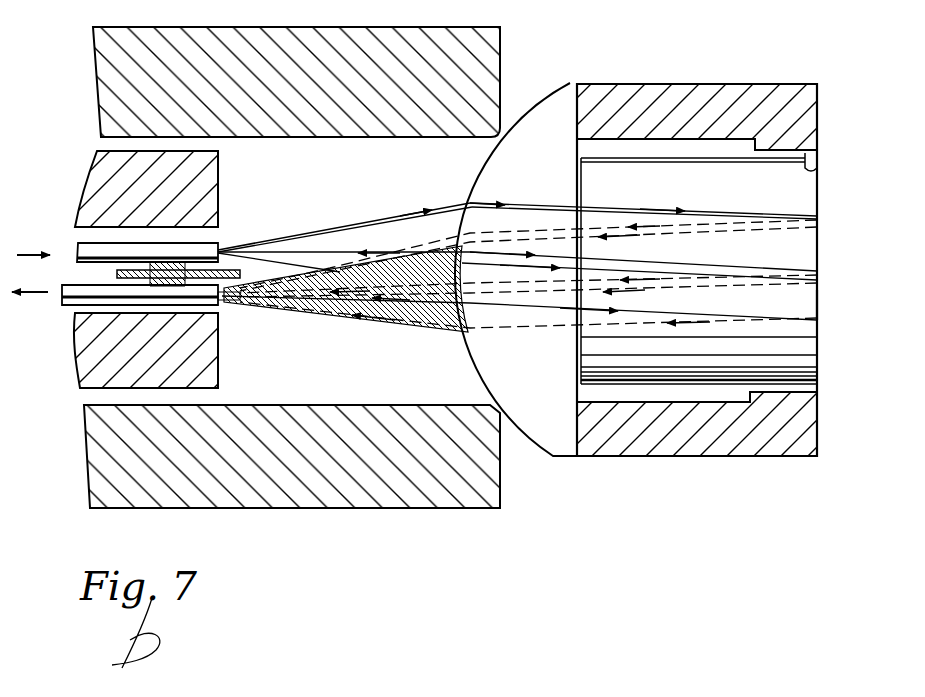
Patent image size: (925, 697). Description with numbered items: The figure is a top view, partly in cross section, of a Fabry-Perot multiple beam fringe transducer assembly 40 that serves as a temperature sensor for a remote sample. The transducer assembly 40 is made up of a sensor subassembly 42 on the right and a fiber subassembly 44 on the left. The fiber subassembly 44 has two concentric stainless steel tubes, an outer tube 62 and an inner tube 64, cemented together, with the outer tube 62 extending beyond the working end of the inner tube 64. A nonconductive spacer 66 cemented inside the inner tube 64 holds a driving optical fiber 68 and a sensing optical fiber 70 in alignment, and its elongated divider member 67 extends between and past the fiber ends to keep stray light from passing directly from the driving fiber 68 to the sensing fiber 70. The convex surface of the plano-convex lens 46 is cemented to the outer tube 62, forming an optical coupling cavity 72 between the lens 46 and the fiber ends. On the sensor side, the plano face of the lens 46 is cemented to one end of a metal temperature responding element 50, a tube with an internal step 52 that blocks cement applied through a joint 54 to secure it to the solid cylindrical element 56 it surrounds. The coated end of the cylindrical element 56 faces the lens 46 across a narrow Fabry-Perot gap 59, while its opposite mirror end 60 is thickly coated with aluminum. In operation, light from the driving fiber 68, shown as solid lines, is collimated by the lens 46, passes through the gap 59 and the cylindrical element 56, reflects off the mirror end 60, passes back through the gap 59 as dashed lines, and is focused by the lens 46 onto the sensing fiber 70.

The Fabry-Perot multiple beam fringe transducer assembly 40 is at (552, 569).
The sensor subassembly 42 is at (742, 475).
The fiber subassembly 44 is at (455, 518).
The plano-convex lens 46 is at (550, 410).
The temperature responding element 50 is at (790, 436).
The internal step 52 is at (735, 139).
The joint 54 is at (818, 172).
The cylindrical element 56 is at (678, 380).
The Fabry-Perot gap 59 is at (583, 174).
The mirror end 60 is at (817, 300).
The outer tube 62 is at (118, 98).
The inner tube 64 is at (95, 353).
The spacer 66 is at (216, 246).
The divider member 67 is at (245, 280).
The driving optical fiber 68 is at (90, 250).
The sensing optical fiber 70 is at (72, 297).
The optical coupling cavity 72 is at (394, 369).